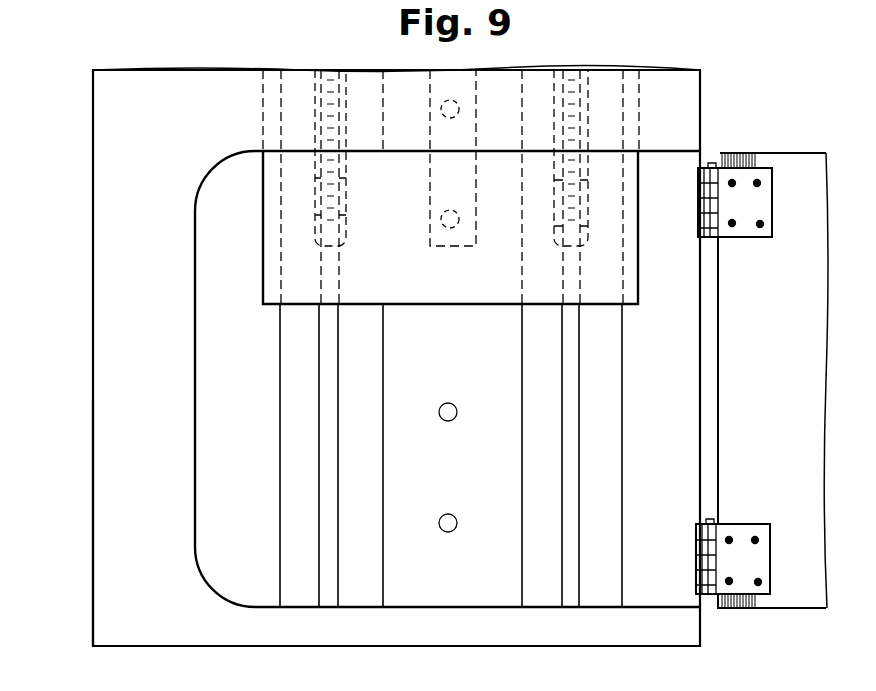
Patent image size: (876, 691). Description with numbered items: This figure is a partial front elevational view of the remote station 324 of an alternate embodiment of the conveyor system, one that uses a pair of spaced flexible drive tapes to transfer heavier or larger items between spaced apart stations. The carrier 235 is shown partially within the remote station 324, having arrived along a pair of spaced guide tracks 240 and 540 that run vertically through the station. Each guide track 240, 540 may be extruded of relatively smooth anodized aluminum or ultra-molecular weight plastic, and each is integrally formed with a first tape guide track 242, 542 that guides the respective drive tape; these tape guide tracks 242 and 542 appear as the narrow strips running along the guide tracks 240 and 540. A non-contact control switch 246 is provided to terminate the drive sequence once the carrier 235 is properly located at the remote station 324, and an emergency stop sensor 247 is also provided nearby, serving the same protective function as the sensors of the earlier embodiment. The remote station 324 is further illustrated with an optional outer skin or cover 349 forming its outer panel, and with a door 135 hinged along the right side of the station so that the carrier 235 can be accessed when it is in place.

The remote station 324 is at (88, 140).
The outer skin or cover 349 is at (102, 482).
The guide track 240 is at (275, 375).
The first tape guide track 242 is at (324, 484).
The carrier 235 is at (431, 308).
The non-contact control switch 246 is at (451, 419).
The emergency stop sensor 247 is at (447, 513).
The guide track 540 is at (628, 383).
The first tape guide track 542 is at (568, 565).
The door 135 is at (791, 392).